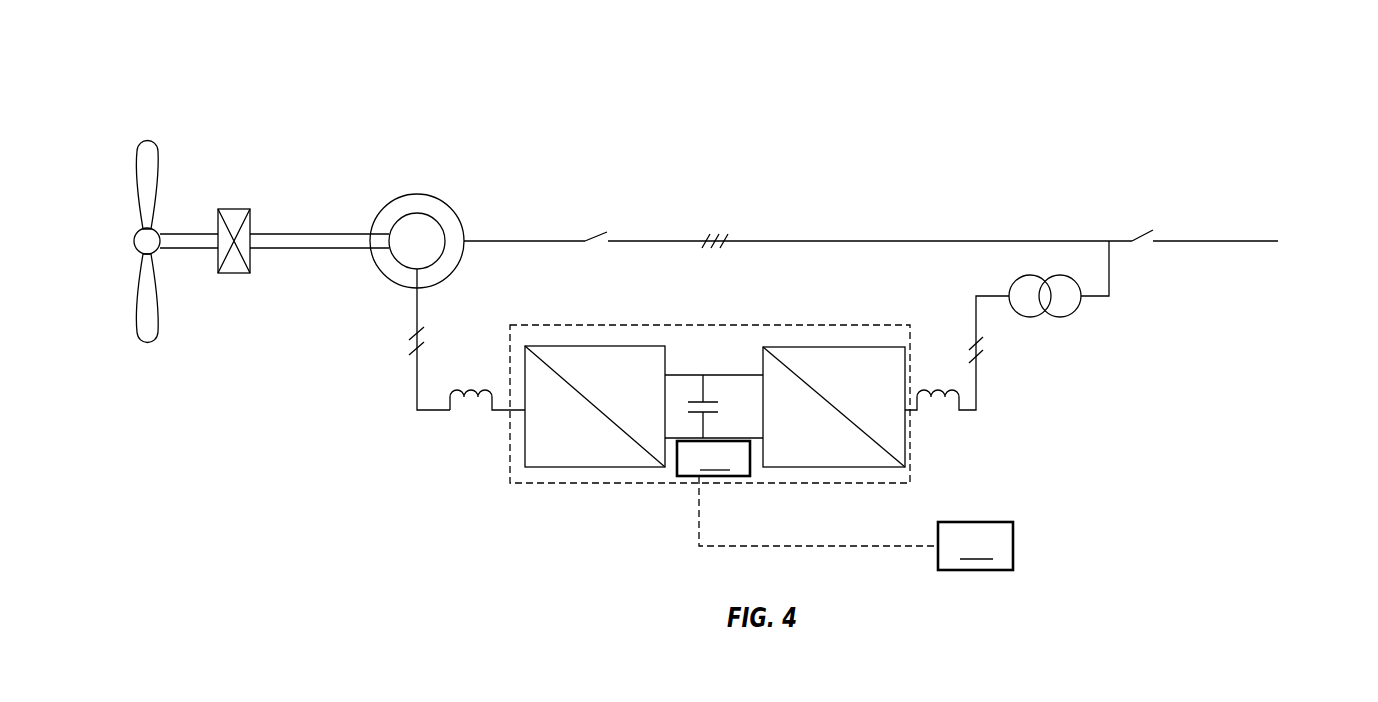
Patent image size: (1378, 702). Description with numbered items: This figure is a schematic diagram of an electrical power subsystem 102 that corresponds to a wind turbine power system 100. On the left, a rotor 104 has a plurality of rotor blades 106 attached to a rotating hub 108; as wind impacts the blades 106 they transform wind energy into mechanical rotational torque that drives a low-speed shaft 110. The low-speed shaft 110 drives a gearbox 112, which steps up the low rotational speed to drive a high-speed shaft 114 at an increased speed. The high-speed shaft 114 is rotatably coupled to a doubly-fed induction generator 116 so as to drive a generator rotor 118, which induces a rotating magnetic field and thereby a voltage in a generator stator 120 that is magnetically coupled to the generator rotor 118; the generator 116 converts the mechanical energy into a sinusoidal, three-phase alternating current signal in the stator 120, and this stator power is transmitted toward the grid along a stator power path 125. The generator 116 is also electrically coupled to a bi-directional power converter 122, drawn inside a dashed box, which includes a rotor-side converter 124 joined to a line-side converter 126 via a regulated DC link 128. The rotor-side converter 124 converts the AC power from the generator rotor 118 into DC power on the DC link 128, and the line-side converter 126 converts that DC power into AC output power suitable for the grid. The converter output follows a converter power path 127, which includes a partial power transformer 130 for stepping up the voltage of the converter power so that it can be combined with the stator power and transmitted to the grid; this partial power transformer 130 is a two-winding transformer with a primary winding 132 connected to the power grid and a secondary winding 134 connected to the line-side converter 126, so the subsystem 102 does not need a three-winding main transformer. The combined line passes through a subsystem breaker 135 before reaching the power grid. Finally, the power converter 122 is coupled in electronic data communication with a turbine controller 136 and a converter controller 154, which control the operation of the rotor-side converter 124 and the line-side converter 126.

The wind turbine power system 100 is at (163, 103).
The electrical power subsystem 102 is at (1038, 125).
The rotor 104 is at (120, 237).
The rotor blades 106 is at (148, 168).
The rotating hub 108 is at (137, 257).
The low-speed shaft 110 is at (175, 240).
The gearbox 112 is at (232, 210).
The high-speed shaft 114 is at (302, 242).
The doubly-fed induction generator 116 is at (445, 193).
The generator rotor 118 is at (393, 262).
The generator stator 120 is at (382, 207).
The bi-directional power converter 122 is at (650, 485).
The rotor-side converter 124 is at (587, 345).
The stator power path 125 is at (772, 240).
The line-side converter 126 is at (825, 345).
The converter power path 127 is at (980, 382).
The regulated DC link 128 is at (712, 370).
The partial power transformer 130 is at (1063, 322).
The primary winding 132 is at (1080, 282).
The secondary winding 134 is at (1015, 275).
The subsystem breaker 135 is at (1162, 230).
The turbine controller 136 is at (856, 523).
The converter controller 154 is at (713, 458).